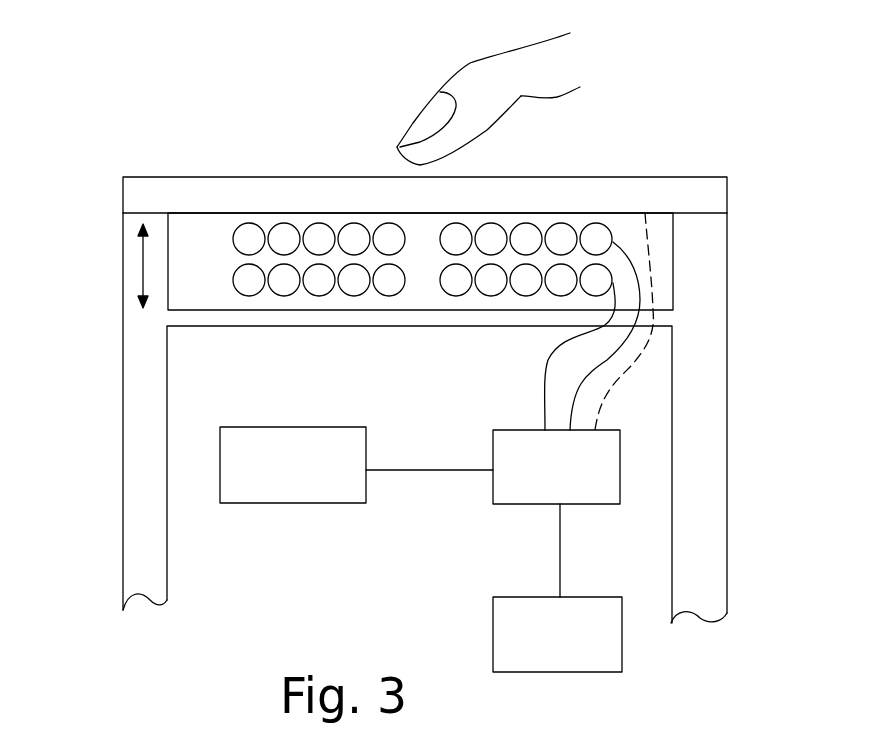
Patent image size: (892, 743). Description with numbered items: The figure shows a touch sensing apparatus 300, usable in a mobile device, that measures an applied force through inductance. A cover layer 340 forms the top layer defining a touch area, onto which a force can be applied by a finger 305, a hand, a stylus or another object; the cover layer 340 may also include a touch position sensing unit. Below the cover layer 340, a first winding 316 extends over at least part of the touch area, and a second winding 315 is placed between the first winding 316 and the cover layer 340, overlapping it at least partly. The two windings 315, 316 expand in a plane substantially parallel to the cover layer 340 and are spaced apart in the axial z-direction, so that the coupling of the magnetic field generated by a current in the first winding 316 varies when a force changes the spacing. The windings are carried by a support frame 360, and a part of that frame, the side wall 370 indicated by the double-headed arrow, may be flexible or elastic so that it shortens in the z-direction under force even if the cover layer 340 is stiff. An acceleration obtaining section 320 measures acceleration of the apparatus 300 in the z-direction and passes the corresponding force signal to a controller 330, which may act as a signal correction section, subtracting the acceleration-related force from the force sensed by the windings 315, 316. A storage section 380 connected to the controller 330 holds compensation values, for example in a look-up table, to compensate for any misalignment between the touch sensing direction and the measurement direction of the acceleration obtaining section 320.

The touch sensing apparatus 300 is at (295, 100).
The finger 305 is at (557, 98).
The second winding 315 is at (230, 238).
The first winding 316 is at (223, 289).
The acceleration obtaining section 320 is at (273, 480).
The controller 330 is at (537, 481).
The cover layer 340 is at (728, 195).
The support frame 360 is at (121, 473).
The side wall 370 is at (141, 262).
The storage section 380 is at (537, 646).